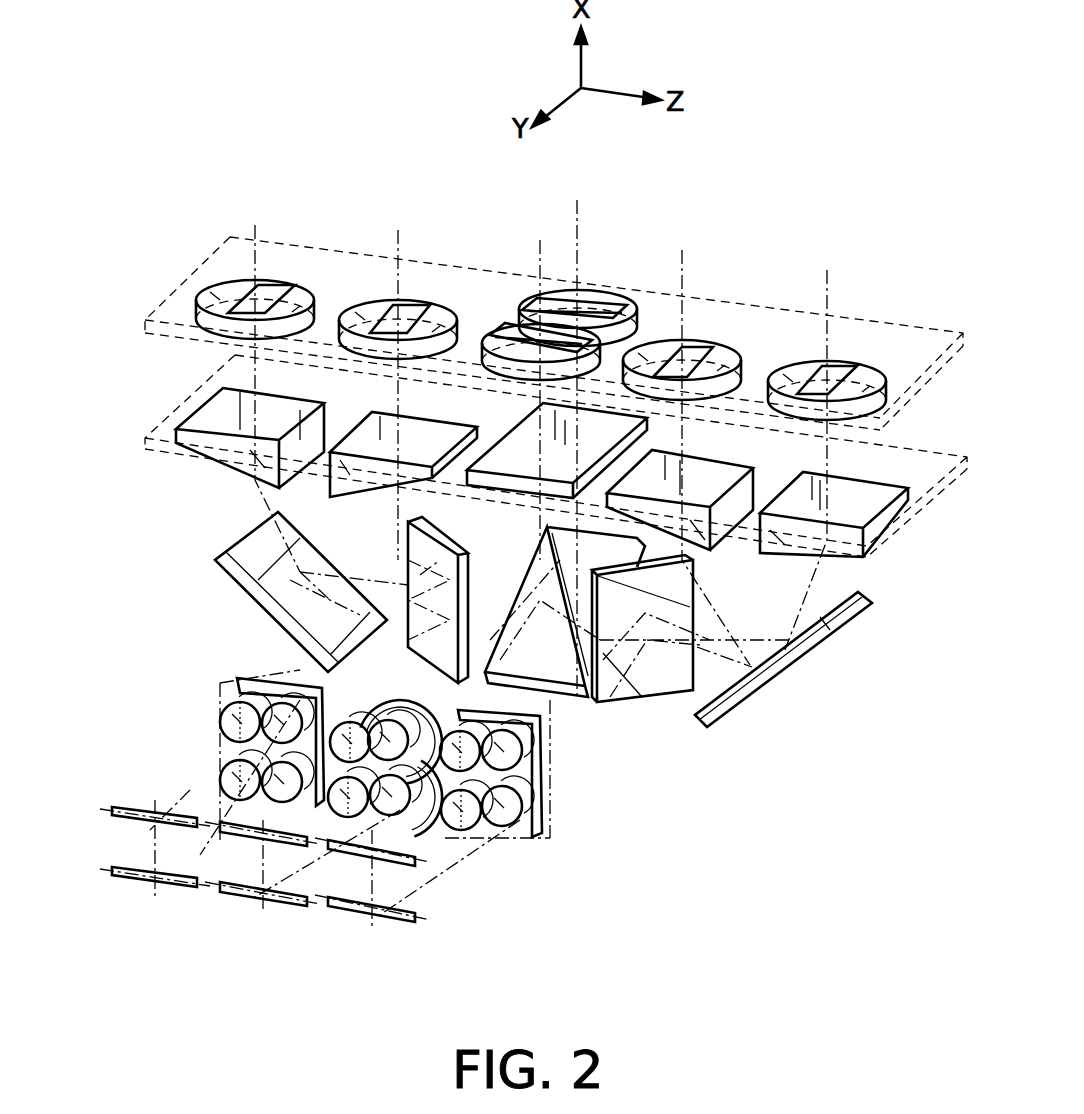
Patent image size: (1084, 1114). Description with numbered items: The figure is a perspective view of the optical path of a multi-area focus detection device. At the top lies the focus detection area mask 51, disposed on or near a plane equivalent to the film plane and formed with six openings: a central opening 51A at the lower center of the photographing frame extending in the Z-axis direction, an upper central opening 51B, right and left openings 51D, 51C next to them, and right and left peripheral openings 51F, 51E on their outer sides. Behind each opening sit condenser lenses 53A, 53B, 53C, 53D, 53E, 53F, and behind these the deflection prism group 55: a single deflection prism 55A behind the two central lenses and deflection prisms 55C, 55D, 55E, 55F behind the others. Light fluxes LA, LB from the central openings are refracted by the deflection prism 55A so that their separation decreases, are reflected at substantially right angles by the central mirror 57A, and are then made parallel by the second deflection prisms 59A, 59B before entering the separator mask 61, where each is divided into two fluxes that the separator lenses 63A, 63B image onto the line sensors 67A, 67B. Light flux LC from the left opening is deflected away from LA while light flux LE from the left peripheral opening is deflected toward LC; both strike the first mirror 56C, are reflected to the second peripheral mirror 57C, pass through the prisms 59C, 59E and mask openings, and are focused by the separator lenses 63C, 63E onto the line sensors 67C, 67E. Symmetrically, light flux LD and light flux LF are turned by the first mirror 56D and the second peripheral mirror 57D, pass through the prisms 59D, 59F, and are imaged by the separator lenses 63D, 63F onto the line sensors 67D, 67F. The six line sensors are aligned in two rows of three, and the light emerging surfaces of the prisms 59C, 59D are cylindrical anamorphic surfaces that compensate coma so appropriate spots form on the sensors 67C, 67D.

The focus detection area mask 51 is at (165, 296).
The central opening 51A is at (490, 336).
The upper central opening 51B is at (610, 296).
The left opening 51C is at (380, 308).
The right opening 51D is at (700, 346).
The left peripheral opening 51E is at (245, 288).
The right peripheral opening 51F is at (845, 364).
The condenser lens 53A is at (512, 321).
The condenser lens 53B is at (600, 301).
The condenser lens 53C is at (425, 304).
The condenser lens 53D is at (715, 366).
The condenser lens 53E is at (290, 286).
The condenser lens 53F is at (860, 381).
The deflection prism group 55 is at (155, 428).
The deflection prism 55A is at (515, 444).
The deflection prism 55C is at (372, 421).
The deflection prism 55D is at (710, 486).
The deflection prism 55E is at (210, 406).
The deflection prism 55F is at (900, 476).
The first mirror 56C is at (250, 548).
The first mirror 56D is at (790, 666).
The central mirror 57A is at (540, 586).
The second peripheral mirror 57C is at (380, 556).
The second peripheral mirror 57D is at (690, 601).
The second deflection prism 59A is at (402, 810).
The second deflection prism 59B is at (400, 708).
The deflection prism 59C is at (270, 696).
The deflection prism 59D is at (550, 711).
The prism 59E is at (245, 766).
The prism 59F is at (545, 791).
The separator mask 61 is at (235, 686).
The separator lens 63A is at (352, 811).
The separator lens 63B is at (397, 808).
The separator lens 63C is at (230, 708).
The separator lens 63D is at (515, 746).
The separator lens 63E is at (228, 771).
The separator lens 63F is at (500, 818).
The line sensor 67A is at (270, 896).
The line sensor 67B is at (240, 836).
The line sensor 67C is at (120, 814).
The line sensor 67D is at (395, 856).
The line sensor 67E is at (138, 878).
The line sensor 67F is at (360, 906).
The light flux LA is at (540, 266).
The light flux LB is at (578, 241).
The light flux LC is at (396, 246).
The light flux LD is at (254, 241).
The light flux LE is at (684, 291).
The light flux LF is at (828, 311).